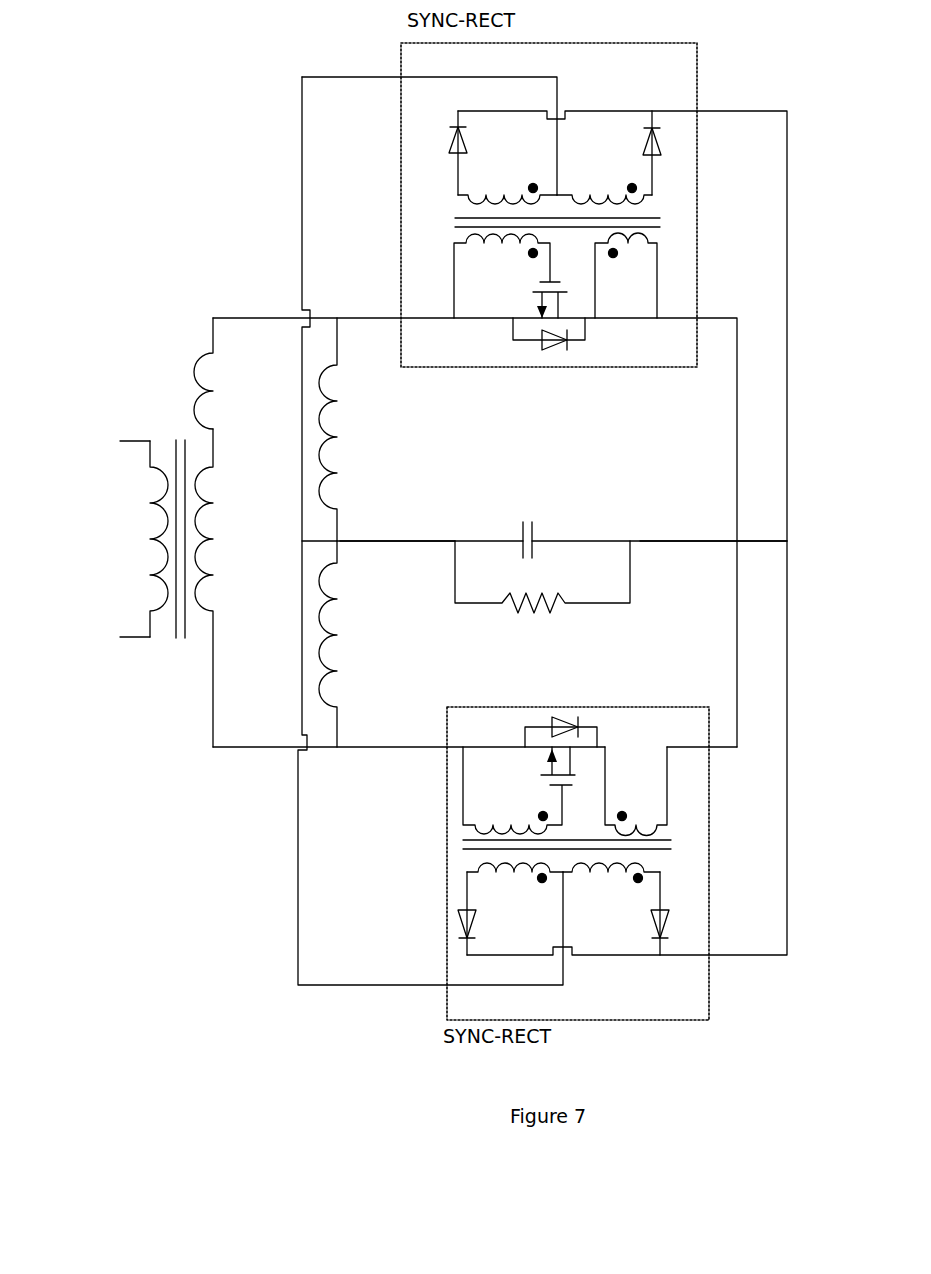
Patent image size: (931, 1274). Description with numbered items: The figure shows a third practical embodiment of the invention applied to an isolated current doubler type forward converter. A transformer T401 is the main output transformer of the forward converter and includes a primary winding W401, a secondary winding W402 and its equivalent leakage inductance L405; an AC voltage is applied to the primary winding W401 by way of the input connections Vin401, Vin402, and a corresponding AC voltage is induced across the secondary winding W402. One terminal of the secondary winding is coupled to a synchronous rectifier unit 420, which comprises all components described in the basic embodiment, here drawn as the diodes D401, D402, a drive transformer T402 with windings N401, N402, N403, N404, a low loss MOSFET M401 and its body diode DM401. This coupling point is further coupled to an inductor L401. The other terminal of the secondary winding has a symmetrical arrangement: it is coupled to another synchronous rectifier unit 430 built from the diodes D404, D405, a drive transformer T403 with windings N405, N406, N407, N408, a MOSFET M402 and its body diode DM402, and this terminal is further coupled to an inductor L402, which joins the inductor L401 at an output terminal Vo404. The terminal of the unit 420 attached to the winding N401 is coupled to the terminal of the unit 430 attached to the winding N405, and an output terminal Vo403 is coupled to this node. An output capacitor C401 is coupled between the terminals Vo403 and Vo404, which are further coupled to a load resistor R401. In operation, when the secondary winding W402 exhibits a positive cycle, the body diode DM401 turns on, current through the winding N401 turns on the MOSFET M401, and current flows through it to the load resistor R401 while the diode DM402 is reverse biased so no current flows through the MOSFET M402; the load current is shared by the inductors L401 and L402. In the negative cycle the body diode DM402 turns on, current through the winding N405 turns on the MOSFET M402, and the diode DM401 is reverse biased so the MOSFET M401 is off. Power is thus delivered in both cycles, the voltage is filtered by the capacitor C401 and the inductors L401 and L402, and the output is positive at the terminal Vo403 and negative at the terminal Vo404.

The synchronous rectifier unit 420 is at (697, 90).
The synchronous rectifier unit 430 is at (710, 975).
The diode D401 is at (675, 140).
The diode D402 is at (446, 147).
The diode D404 is at (680, 930).
The diode D405 is at (455, 920).
The transformer T401 is at (185, 549).
The drive transformer (top) T402 is at (487, 236).
The drive transformer (bottom) T403 is at (515, 834).
The winding N401 is at (632, 252).
The winding N402 is at (493, 252).
The winding N403 is at (592, 190).
The winding N404 is at (507, 190).
The winding N405 is at (645, 822).
The winding N406 is at (503, 820).
The winding N407 is at (598, 873).
The winding N408 is at (513, 880).
The MOSFET M401 is at (532, 300).
The MOSFET M402 is at (540, 770).
The body diode DM401 is at (542, 352).
The body diode DM402 is at (588, 720).
The inductor L401 is at (337, 457).
The inductor L402 is at (337, 612).
The equivalent leakage inductance L405 is at (213, 373).
The primary winding W401 is at (152, 548).
The secondary winding W402 is at (177, 435).
The output capacitor C401 is at (558, 502).
The load resistor R401 is at (520, 617).
The input terminal Vin401 is at (125, 428).
The input terminal Vin402 is at (102, 640).
The output terminal Vo403 is at (690, 525).
The output terminal Vo404 is at (410, 548).